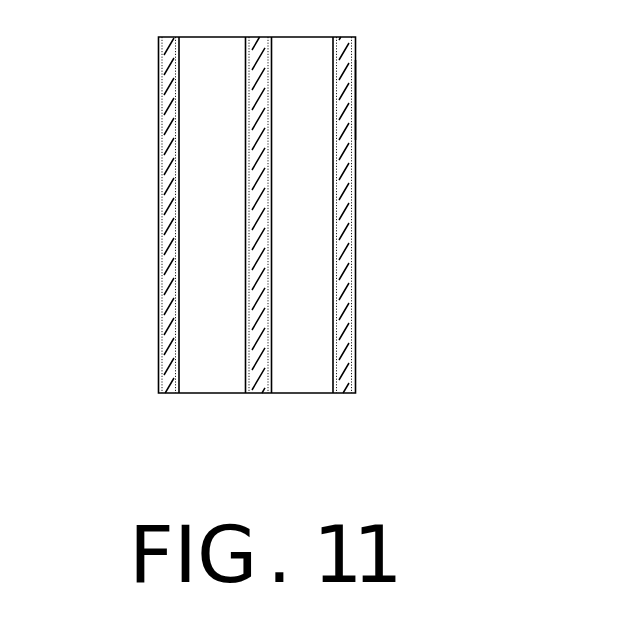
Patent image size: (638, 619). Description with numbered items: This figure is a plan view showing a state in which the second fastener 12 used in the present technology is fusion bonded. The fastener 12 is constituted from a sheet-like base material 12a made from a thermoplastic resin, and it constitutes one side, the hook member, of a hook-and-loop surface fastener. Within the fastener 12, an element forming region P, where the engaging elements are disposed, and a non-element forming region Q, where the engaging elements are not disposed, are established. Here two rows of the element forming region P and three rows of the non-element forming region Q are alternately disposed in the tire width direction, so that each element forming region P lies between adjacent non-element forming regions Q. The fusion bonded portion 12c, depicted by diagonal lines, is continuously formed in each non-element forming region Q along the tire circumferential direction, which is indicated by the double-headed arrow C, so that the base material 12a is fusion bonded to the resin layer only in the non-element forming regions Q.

The fastener 12 is at (357, 177).
The base material 12a is at (356, 103).
The fusion bonded portion 12c is at (356, 226).
The direction C is at (87, 171).
The element forming region P is at (217, 357).
The non-element forming region Q is at (158, 390).